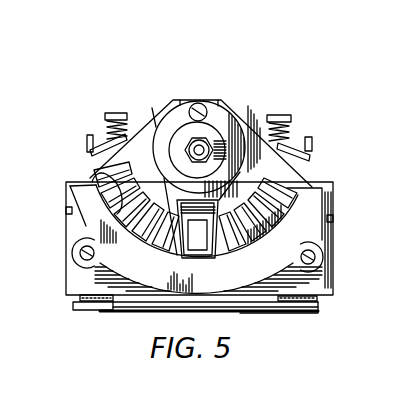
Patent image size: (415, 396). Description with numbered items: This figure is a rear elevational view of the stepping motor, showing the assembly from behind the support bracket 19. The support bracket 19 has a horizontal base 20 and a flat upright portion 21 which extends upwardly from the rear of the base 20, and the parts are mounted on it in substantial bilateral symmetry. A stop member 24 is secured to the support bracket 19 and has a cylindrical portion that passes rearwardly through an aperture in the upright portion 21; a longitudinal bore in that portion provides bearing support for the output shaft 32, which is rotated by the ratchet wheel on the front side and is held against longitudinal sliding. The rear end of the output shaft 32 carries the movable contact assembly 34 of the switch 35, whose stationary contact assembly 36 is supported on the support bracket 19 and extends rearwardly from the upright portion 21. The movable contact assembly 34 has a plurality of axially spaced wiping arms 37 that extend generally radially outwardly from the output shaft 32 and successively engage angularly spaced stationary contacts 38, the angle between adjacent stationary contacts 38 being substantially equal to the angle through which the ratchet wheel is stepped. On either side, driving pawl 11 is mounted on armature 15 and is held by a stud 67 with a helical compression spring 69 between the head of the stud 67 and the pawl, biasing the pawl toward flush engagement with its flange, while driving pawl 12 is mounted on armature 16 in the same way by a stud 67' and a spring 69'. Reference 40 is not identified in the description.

The driving pawl 11 is at (307, 136).
The driving pawl 12 is at (102, 125).
The armature 15 is at (314, 143).
The armature 16 is at (84, 143).
The support bracket 19 is at (80, 316).
The horizontal base 20 is at (320, 312).
The flat upright portion 21 is at (290, 177).
The stop member 24 is at (233, 102).
The output shaft 32 is at (212, 138).
The movable contact assembly 34 is at (157, 123).
The switch 35 is at (147, 183).
The stationary contact assembly 36 is at (64, 232).
The wiping arms 37 is at (200, 196).
The stationary contacts 38 is at (98, 176).
The sheet number 40 is at (281, 6).
The stud 67 is at (289, 102).
The stud 67' is at (118, 101).
The helical compression spring 69 is at (300, 117).
The spring 69' is at (94, 113).